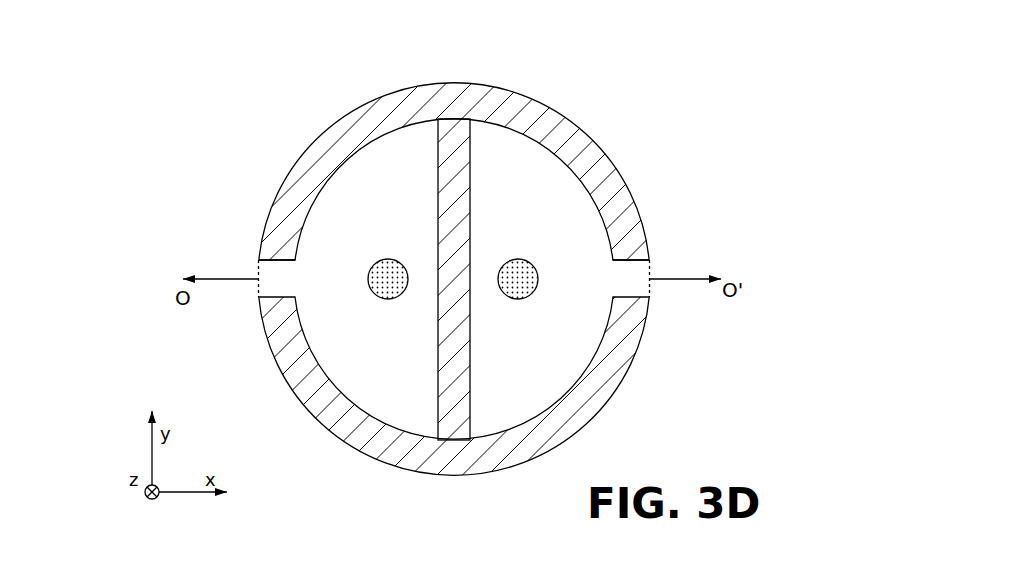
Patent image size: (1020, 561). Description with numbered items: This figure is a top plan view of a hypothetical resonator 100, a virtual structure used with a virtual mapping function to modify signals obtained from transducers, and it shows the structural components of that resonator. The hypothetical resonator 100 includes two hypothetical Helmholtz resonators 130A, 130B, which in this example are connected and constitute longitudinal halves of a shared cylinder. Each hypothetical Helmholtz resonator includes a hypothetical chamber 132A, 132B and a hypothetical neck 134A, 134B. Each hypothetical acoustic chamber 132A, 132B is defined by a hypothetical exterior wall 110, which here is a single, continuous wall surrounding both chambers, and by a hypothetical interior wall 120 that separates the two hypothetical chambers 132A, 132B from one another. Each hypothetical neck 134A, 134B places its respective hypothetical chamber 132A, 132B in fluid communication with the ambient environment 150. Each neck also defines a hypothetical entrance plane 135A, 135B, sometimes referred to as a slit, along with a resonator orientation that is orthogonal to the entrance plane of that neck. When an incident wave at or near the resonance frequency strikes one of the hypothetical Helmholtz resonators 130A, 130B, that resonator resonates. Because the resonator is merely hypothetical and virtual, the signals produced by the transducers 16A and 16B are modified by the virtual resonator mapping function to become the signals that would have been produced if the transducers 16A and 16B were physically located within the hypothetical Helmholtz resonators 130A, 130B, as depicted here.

The hypothetical resonator 100 is at (205, 70).
The hypothetical exterior wall 110 is at (357, 108).
The hypothetical interior wall 120 is at (460, 182).
The ambient environment 150 is at (786, 61).
The transducer 16A is at (374, 293).
The transducer 16B is at (524, 258).
The hypothetical Helmholtz resonator 130A is at (114, 284).
The hypothetical Helmholtz resonator 130B is at (808, 285).
The hypothetical chamber 132A is at (352, 198).
The hypothetical chamber 132B is at (580, 316).
The hypothetical neck 134A is at (266, 260).
The hypothetical neck 134B is at (634, 258).
The hypothetical entrance plane 135A is at (255, 268).
The hypothetical entrance plane 135B is at (657, 268).